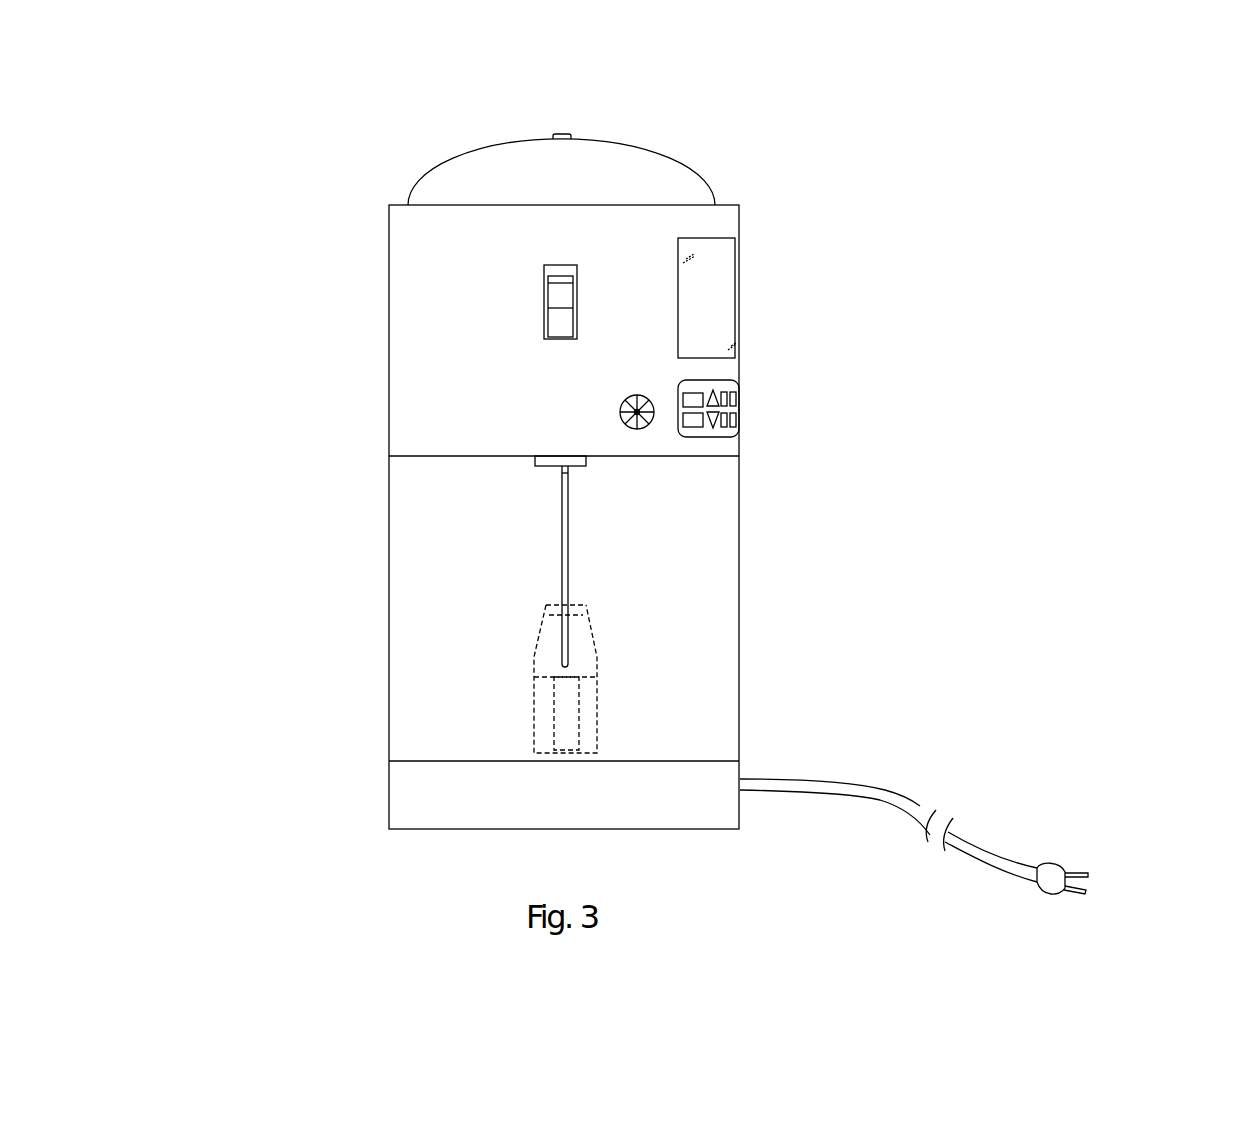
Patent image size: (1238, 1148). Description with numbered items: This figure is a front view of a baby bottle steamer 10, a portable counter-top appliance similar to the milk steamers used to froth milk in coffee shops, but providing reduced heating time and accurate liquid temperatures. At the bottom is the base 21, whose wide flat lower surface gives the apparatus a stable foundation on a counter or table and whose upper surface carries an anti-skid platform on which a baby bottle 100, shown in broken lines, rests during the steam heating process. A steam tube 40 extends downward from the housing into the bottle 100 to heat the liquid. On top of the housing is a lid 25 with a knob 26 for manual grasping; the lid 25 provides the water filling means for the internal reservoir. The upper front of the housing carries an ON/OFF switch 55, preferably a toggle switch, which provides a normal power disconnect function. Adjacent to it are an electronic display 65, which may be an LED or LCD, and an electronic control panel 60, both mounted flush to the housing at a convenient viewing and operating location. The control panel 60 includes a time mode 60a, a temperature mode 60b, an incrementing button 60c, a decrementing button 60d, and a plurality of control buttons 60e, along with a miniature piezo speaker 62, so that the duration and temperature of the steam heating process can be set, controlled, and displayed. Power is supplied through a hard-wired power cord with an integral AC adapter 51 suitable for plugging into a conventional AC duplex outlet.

The baby bottle steamer 10 is at (1116, 191).
The base 21 is at (389, 812).
The lid 25 is at (497, 157).
The knob 26 is at (571, 137).
The steam tube 40 is at (570, 557).
The AC adapter 51 is at (917, 802).
The ON/OFF switch 55 is at (548, 302).
The control panel 60 is at (725, 411).
The time mode 60a is at (693, 392).
The temperature mode 60b is at (693, 425).
The incrementing button 60c is at (709, 403).
The decrementing button 60d is at (710, 417).
The control buttons 60e is at (736, 430).
The miniature piezo speaker 62 is at (620, 405).
The electronic display 65 is at (723, 257).
The baby bottle 100 is at (537, 652).